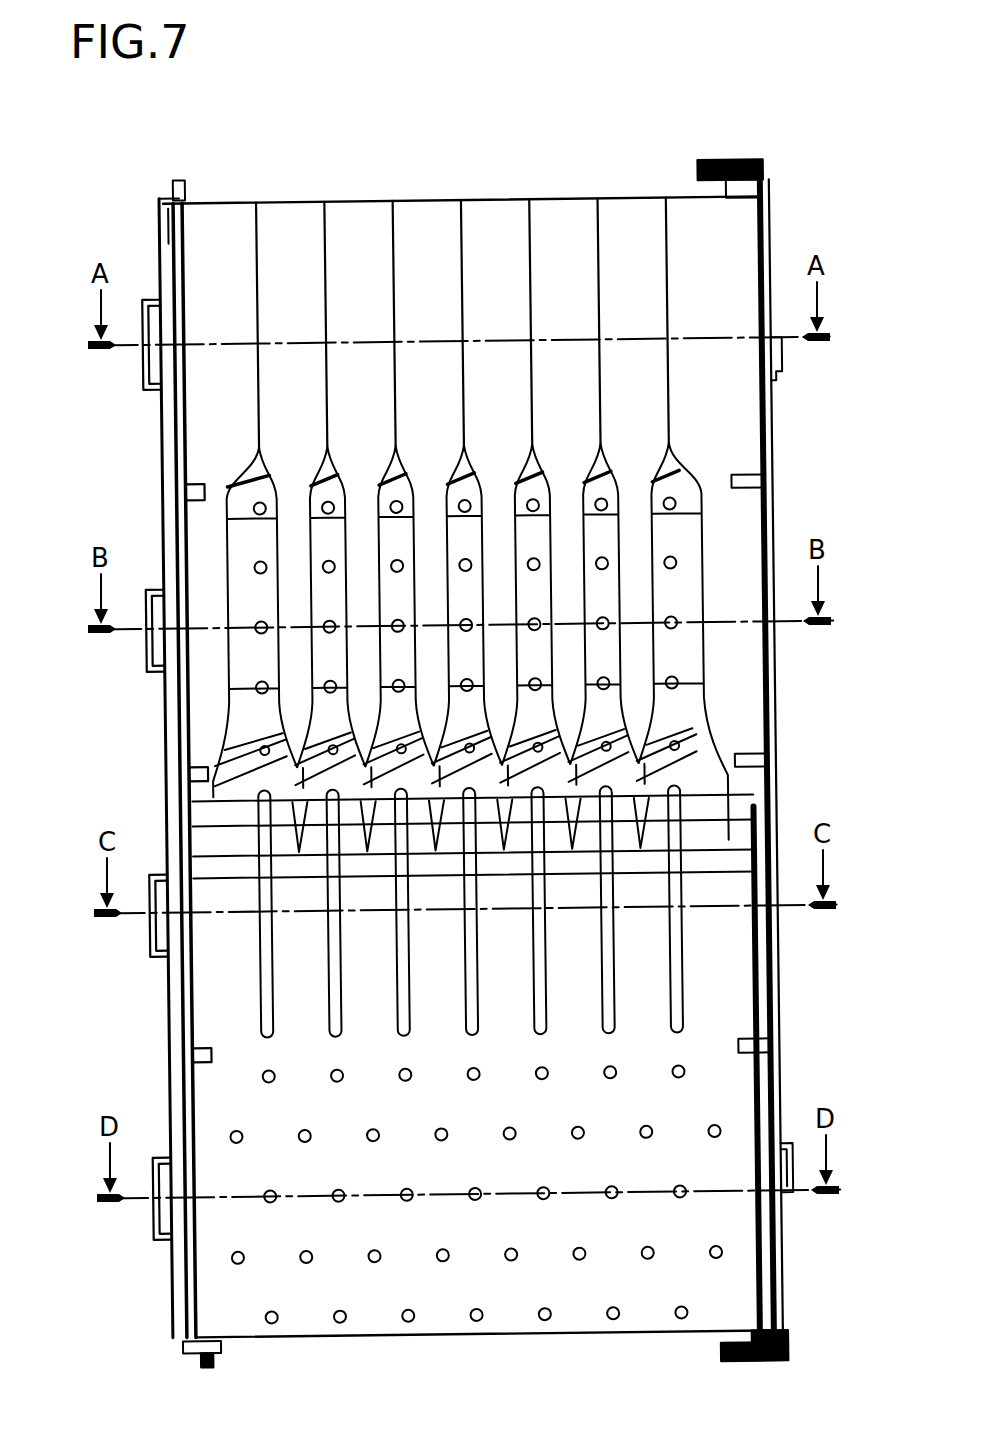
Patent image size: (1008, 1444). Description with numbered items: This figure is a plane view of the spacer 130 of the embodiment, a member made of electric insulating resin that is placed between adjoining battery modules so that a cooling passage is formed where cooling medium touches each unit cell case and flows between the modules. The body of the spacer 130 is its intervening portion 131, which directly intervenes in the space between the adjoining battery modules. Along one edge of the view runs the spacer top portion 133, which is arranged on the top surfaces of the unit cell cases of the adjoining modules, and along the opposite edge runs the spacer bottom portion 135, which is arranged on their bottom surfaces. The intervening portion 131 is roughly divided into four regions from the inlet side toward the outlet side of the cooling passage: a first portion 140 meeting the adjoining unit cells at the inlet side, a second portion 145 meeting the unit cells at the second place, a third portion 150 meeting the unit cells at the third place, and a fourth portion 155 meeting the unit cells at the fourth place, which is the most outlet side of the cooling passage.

The spacer 130 is at (437, 148).
The intervening portion 131 is at (230, 233).
The first portion 140 is at (720, 392).
The second portion 145 is at (738, 655).
The spacer top portion 133 is at (162, 741).
The spacer bottom portion 135 is at (779, 748).
The third portion 150 is at (702, 932).
The fourth portion 155 is at (705, 1210).